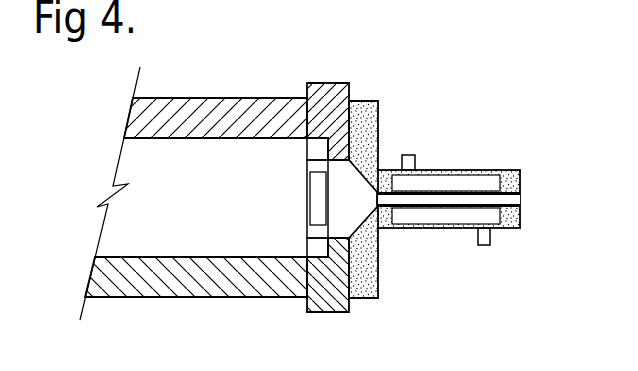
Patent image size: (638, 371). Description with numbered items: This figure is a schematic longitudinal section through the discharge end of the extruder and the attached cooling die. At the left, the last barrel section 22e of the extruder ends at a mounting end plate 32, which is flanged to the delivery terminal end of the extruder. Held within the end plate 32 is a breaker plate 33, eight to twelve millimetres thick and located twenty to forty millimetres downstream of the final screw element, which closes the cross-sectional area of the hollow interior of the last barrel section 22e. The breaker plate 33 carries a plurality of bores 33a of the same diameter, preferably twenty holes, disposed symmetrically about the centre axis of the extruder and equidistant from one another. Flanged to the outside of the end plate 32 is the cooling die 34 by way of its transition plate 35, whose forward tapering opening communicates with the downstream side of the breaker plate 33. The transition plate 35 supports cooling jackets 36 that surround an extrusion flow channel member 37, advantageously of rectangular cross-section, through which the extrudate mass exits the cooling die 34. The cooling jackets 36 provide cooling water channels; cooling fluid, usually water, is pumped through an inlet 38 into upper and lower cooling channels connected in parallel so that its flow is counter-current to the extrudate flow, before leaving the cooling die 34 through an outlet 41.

The last barrel section 22e is at (285, 104).
The mounting end plate 32 is at (318, 297).
The breaker plate 33 is at (307, 195).
The bores 33a is at (308, 163).
The cooling die 34 is at (478, 178).
The transition plate 35 is at (367, 300).
The cooling jackets 36 is at (490, 185).
The extrusion flow channel member 37 is at (520, 197).
The inlet 38 is at (482, 245).
The outlet 41 is at (409, 155).